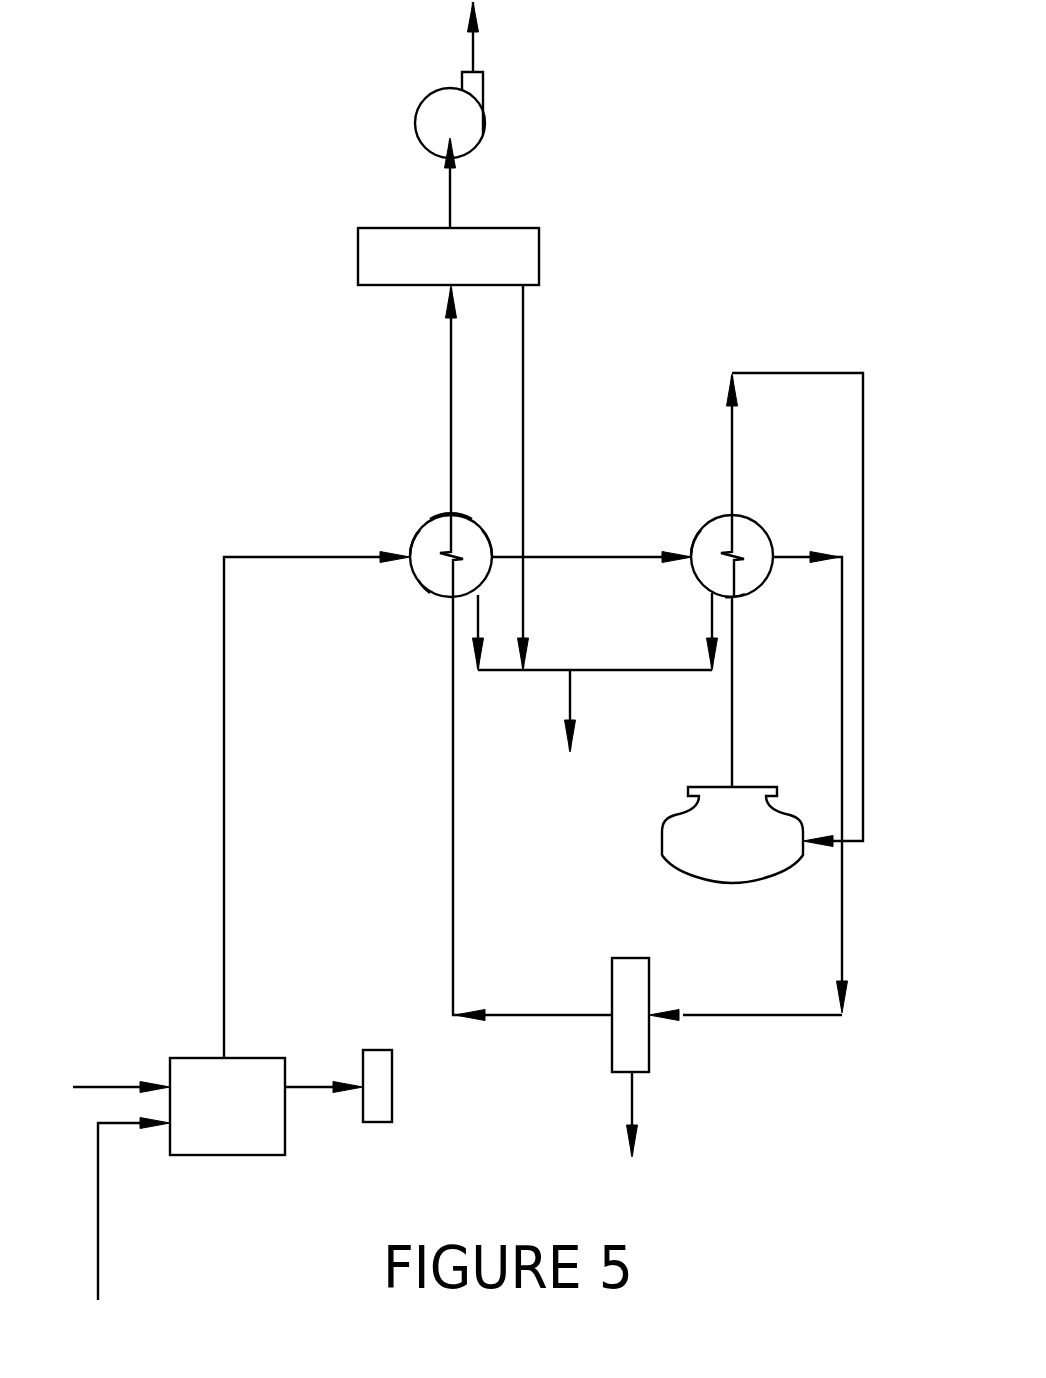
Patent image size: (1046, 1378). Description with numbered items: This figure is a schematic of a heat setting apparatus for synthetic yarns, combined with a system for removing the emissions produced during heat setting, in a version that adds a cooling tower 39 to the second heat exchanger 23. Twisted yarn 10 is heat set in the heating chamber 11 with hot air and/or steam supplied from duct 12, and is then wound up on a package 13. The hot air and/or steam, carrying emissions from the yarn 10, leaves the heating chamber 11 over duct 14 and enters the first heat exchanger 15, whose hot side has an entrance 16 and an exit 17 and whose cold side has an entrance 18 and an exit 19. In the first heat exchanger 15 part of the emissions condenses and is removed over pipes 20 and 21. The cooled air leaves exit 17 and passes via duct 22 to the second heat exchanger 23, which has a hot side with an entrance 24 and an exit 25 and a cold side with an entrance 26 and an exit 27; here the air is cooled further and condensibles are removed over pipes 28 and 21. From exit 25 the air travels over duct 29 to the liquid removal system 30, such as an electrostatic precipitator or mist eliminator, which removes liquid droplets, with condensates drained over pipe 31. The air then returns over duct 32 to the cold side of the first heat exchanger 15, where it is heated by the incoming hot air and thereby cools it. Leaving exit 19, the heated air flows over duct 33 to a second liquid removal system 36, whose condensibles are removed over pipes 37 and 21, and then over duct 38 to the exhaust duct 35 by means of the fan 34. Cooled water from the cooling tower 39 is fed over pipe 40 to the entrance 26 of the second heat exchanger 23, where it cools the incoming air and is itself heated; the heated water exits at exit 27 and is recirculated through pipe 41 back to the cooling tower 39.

The twisted yarn 10 is at (90, 1085).
The heating chamber 11 is at (240, 1090).
The duct 12 is at (98, 1223).
The package 13 is at (380, 1093).
The duct 14 is at (225, 865).
The first heat exchanger 15 is at (465, 533).
The entrance 16 is at (412, 550).
The exit 17 is at (493, 547).
The entrance 18 is at (450, 597).
The exit 19 is at (452, 513).
The pipe 20 is at (478, 617).
The pipe 21 is at (570, 705).
The duct 22 is at (588, 553).
The second heat exchanger 23 is at (745, 530).
The entrance 24 is at (697, 552).
The exit 25 is at (772, 553).
The entrance 26 is at (732, 595).
The exit 27 is at (732, 515).
The pipe 28 is at (710, 613).
The duct 29 is at (837, 748).
The liquid removal system 30 is at (633, 972).
The pipe 31 is at (632, 1100).
The duct 32 is at (453, 837).
The duct 33 is at (448, 378).
The fan 34 is at (470, 122).
The exhaust duct 35 is at (473, 50).
The liquid removal system 36 is at (517, 257).
The pipe 37 is at (523, 367).
The duct 38 is at (452, 193).
The cooling tower 39 is at (742, 862).
The pipe 40 is at (732, 725).
The pipe 41 is at (867, 442).